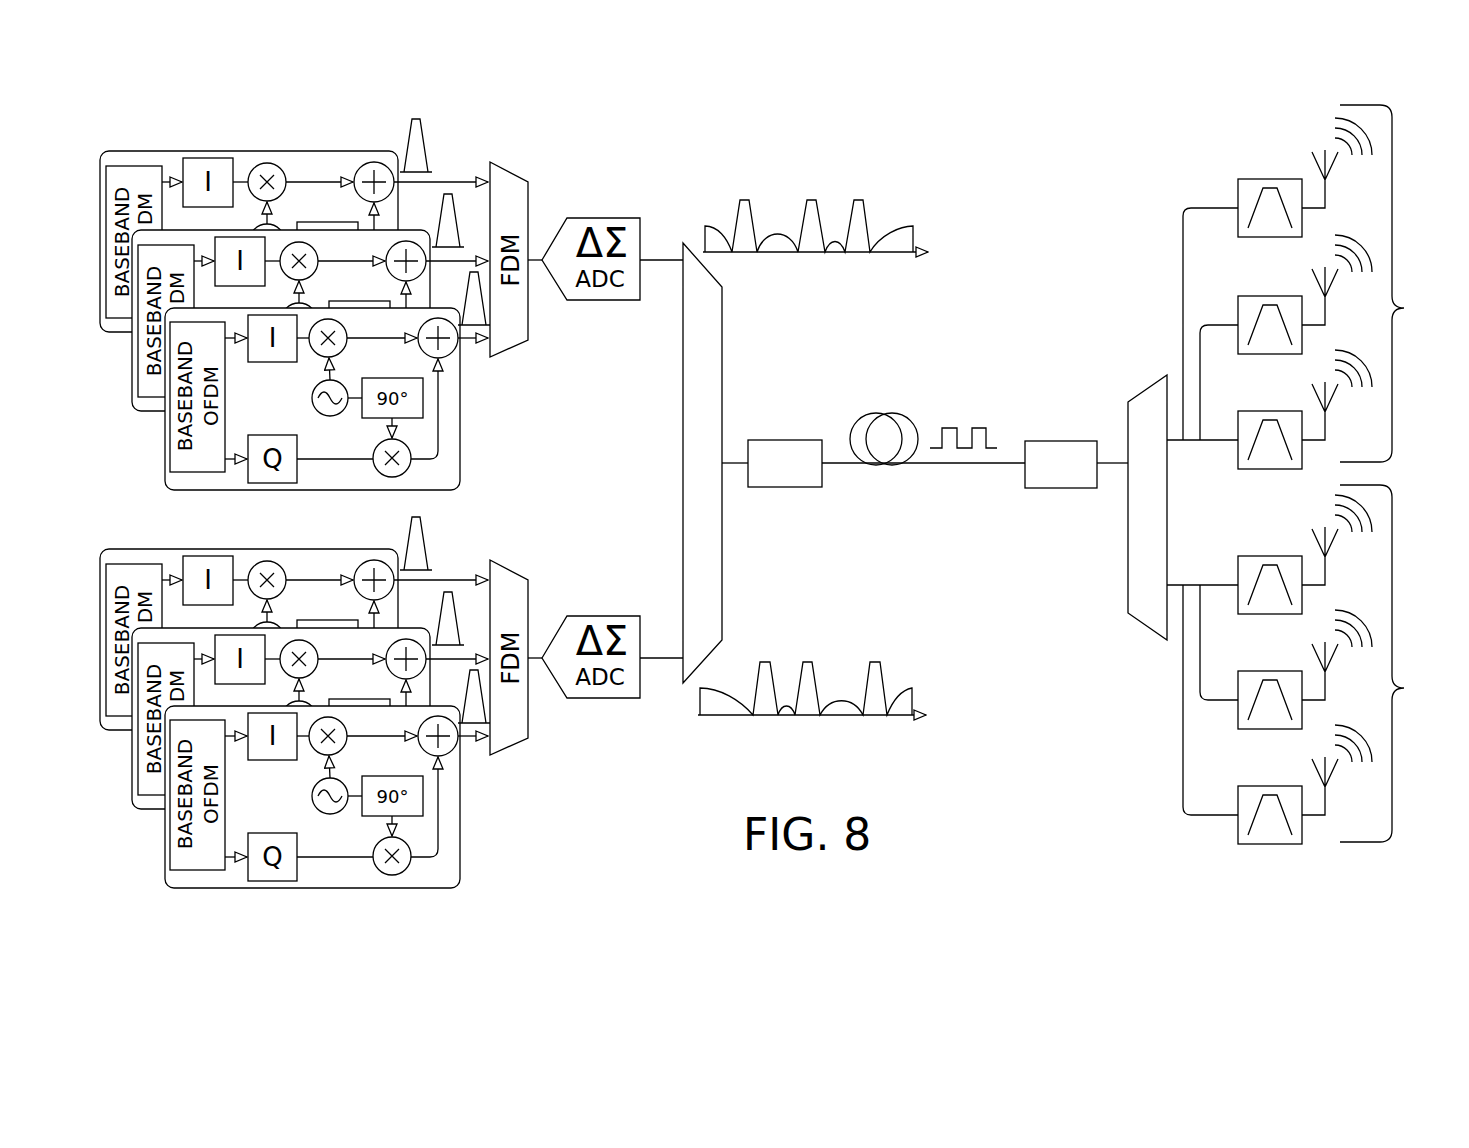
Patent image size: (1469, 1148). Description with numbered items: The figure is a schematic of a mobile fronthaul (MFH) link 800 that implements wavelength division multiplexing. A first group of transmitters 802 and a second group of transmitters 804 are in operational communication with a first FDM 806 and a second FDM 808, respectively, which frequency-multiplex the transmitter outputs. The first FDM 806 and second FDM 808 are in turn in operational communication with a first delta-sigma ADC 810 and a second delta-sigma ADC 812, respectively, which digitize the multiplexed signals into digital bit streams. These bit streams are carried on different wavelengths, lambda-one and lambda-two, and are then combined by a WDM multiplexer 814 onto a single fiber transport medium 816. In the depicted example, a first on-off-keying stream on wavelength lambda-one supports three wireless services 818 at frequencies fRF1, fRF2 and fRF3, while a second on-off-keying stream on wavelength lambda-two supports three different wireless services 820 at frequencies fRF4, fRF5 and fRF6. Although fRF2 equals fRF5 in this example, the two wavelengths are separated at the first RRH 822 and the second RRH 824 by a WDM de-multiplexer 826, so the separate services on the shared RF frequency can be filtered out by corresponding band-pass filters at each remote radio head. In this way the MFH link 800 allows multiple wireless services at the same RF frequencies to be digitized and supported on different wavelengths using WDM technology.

The MFH link 800 is at (1024, 156).
The first group of transmitters 802 is at (305, 265).
The second group of transmitters 804 is at (319, 707).
The first FDM 806 is at (507, 169).
The second FDM 808 is at (530, 736).
The first delta-sigma ADC 810 is at (600, 217).
The second delta-sigma ADC 812 is at (596, 615).
The WDM multiplexer 814 is at (723, 317).
The single fiber transport medium 816 is at (1003, 464).
The wireless services 818 is at (437, 126).
The wireless services 820 is at (466, 533).
The first RRH 822 is at (1318, 287).
The second RRH 824 is at (1316, 664).
The WDM de-multiplexer 826 is at (1143, 388).